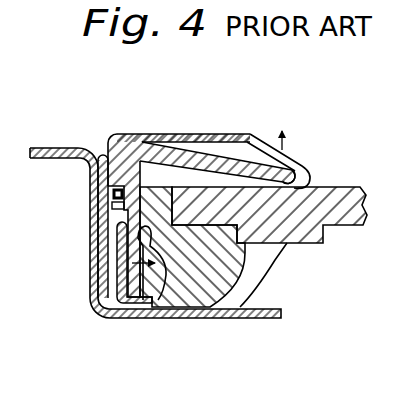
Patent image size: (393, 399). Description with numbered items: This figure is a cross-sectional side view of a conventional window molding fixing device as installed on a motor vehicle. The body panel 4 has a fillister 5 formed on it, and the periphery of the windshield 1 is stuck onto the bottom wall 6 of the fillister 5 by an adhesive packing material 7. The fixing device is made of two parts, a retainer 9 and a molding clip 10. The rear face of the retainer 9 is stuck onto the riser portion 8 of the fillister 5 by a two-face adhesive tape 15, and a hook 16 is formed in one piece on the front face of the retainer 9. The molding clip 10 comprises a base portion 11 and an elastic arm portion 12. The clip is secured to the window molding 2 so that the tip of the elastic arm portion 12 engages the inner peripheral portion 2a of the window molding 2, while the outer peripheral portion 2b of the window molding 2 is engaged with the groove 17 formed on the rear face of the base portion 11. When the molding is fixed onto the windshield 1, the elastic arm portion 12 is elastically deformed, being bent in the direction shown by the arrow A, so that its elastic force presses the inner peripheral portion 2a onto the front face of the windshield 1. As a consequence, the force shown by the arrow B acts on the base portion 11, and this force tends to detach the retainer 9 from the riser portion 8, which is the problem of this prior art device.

The windshield 1 is at (324, 188).
The window molding 2 is at (195, 186).
The inner peripheral portion 2a is at (313, 175).
The outer peripheral portion 2b is at (108, 206).
The body panel 4 is at (44, 148).
The fillister 5 is at (151, 236).
The bottom wall 6 is at (175, 312).
The adhesive packing material 7 is at (210, 298).
The riser portion 8 is at (92, 240).
The retainer 9 is at (106, 318).
The molding clip 10 is at (218, 149).
The base portion 11 is at (103, 166).
The elastic arm portion 12 is at (250, 155).
The two-face adhesive tape 15 is at (120, 266).
The hook 16 is at (159, 300).
The groove 17 is at (103, 198).
The arrow A is at (287, 140).
The arrow B is at (121, 298).